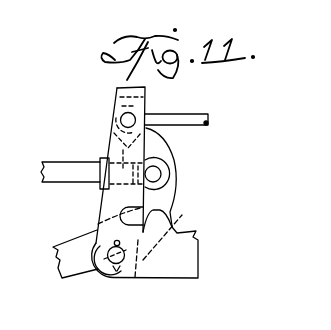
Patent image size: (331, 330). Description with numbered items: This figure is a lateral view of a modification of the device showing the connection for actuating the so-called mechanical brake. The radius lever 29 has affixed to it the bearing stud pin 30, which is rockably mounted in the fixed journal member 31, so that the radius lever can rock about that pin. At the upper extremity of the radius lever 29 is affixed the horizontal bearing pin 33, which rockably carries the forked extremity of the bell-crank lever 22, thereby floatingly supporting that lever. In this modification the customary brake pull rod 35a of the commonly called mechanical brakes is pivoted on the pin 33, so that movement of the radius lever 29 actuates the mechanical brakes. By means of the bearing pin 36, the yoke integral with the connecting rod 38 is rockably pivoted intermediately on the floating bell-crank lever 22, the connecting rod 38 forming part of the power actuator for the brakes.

The radius lever 29 is at (147, 88).
The horizontal bearing pin 33 is at (120, 118).
The connecting rod 38 is at (60, 163).
The brake pull rod 35a is at (210, 115).
The bell-crank lever 22 is at (173, 152).
The bearing pin 36 is at (161, 174).
The fixed journal member 31 is at (186, 238).
The bearing stud pin 30 is at (115, 262).